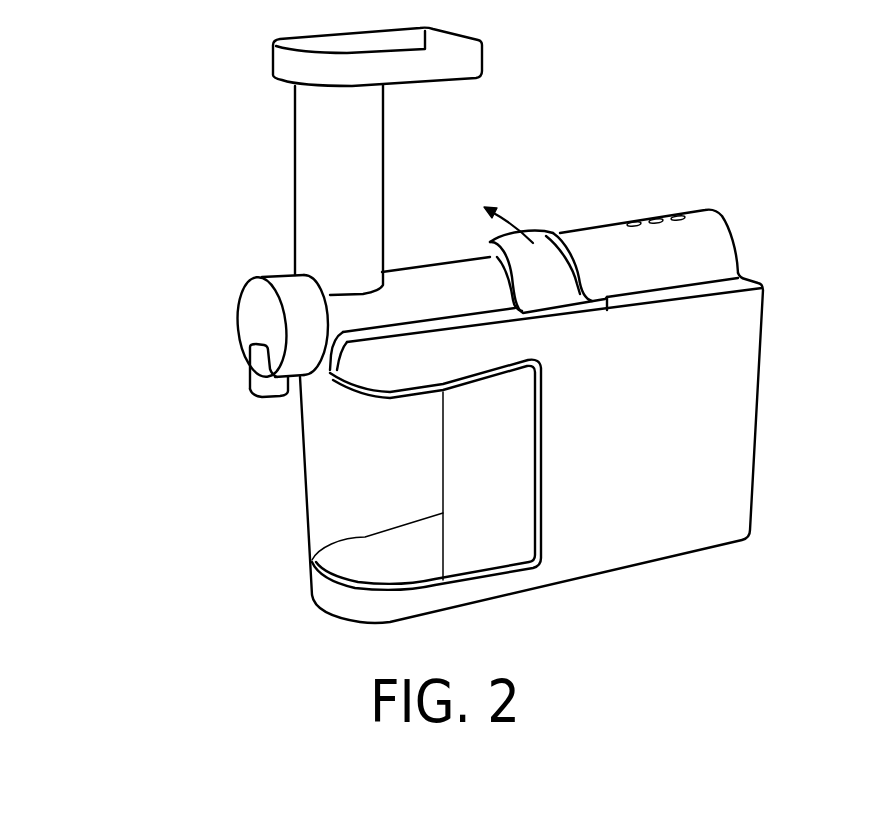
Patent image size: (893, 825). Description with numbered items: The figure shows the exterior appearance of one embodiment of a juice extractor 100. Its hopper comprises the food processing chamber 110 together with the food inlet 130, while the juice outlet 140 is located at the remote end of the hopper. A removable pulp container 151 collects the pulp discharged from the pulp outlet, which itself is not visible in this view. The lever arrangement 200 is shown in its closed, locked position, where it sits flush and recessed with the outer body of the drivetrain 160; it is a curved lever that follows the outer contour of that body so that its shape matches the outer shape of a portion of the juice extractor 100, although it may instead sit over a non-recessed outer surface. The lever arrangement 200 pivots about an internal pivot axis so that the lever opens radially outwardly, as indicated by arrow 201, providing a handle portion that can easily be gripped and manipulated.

The juice extractor 100 is at (118, 181).
The food processing chamber 110 is at (427, 272).
The food inlet 130 is at (273, 60).
The juice outlet 140 is at (250, 378).
The removable pulp container 151 is at (320, 483).
The drivetrain 160 is at (702, 225).
The lever arrangement 200 is at (545, 285).
The arrow 201 is at (485, 203).